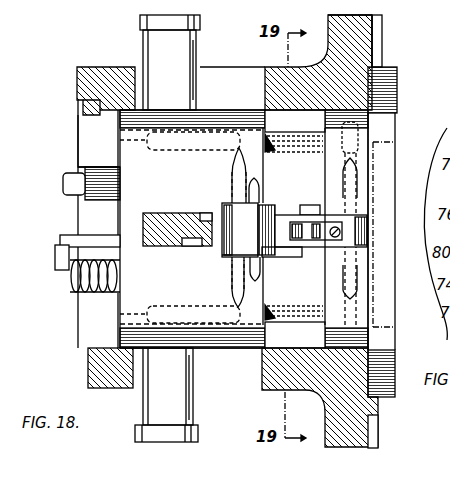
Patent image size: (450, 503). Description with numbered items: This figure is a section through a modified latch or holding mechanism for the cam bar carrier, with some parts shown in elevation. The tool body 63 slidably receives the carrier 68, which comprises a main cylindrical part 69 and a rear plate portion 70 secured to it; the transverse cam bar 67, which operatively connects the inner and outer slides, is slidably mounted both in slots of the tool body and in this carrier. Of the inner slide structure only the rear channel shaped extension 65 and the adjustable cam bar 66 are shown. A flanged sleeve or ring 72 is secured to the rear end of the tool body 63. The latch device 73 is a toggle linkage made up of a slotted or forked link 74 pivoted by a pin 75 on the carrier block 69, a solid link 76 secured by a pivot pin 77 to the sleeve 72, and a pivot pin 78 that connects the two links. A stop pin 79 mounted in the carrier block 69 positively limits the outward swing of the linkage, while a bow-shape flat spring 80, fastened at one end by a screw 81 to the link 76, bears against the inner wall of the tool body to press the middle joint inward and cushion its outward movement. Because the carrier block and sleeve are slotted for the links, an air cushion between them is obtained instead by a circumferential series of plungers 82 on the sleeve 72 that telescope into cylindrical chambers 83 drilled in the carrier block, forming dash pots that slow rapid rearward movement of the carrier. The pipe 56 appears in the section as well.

The pipe 56 is at (182, 400).
The tool body 63 is at (360, 37).
The rear channel shaped extension 65 is at (70, 278).
The adjustable cam bar 66 is at (55, 258).
The transverse cam bar 67 is at (158, 213).
The carrier 68 is at (110, 155).
The main cylindrical part 69 is at (120, 212).
The rear plate portion 70 is at (372, 150).
The flanged sleeve 72 is at (396, 67).
The latch device 73 is at (306, 205).
The slotted link 74 is at (275, 257).
The pin 75 is at (235, 255).
The solid link 76 is at (335, 245).
The pivot pin 77 is at (360, 200).
The pivot pin 78 is at (283, 205).
The stop pin 79 is at (224, 212).
The bow-shape flat spring 80 is at (316, 250).
The screw 81 is at (340, 232).
The plungers 82 is at (292, 142).
The cylindrical chambers 83 is at (220, 110).